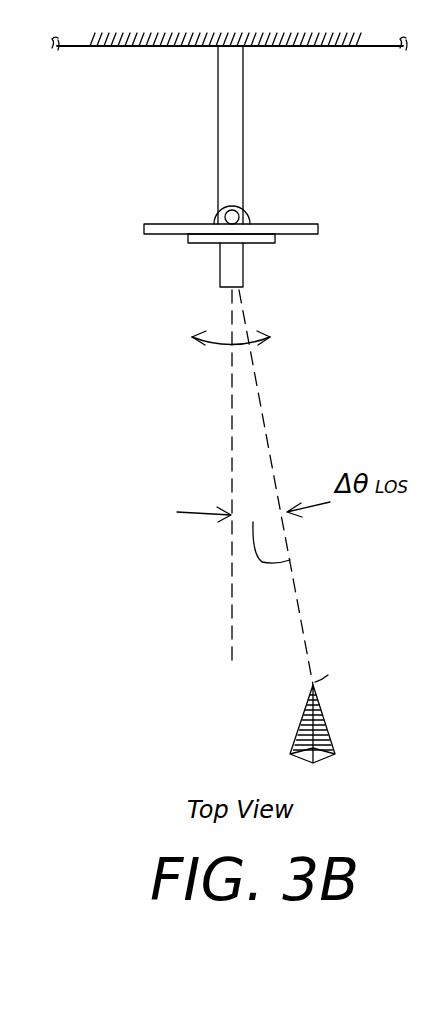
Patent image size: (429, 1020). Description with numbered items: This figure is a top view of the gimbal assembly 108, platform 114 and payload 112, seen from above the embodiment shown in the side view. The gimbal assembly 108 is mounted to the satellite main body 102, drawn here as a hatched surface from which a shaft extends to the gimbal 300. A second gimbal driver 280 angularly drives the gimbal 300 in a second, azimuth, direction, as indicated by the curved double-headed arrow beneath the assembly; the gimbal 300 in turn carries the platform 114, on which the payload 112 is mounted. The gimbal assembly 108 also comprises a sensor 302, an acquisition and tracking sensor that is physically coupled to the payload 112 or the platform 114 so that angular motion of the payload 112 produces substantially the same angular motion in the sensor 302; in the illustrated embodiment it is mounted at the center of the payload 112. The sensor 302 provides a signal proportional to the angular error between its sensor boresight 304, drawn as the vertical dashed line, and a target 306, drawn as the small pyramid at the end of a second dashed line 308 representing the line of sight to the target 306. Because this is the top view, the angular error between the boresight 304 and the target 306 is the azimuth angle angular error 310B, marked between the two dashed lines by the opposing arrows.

The satellite main body 102 is at (177, 46).
The gimbal assembly 108 is at (280, 52).
The second gimbal driver 280 is at (215, 221).
The gimbal 300 is at (215, 219).
The platform 114 is at (312, 222).
The payload 112 is at (254, 247).
The sensor 302 is at (218, 273).
The sensor boresight 304 is at (233, 637).
The line of sight 308 is at (273, 470).
The azimuth angle angular error 310B is at (308, 559).
The target 306 is at (327, 720).